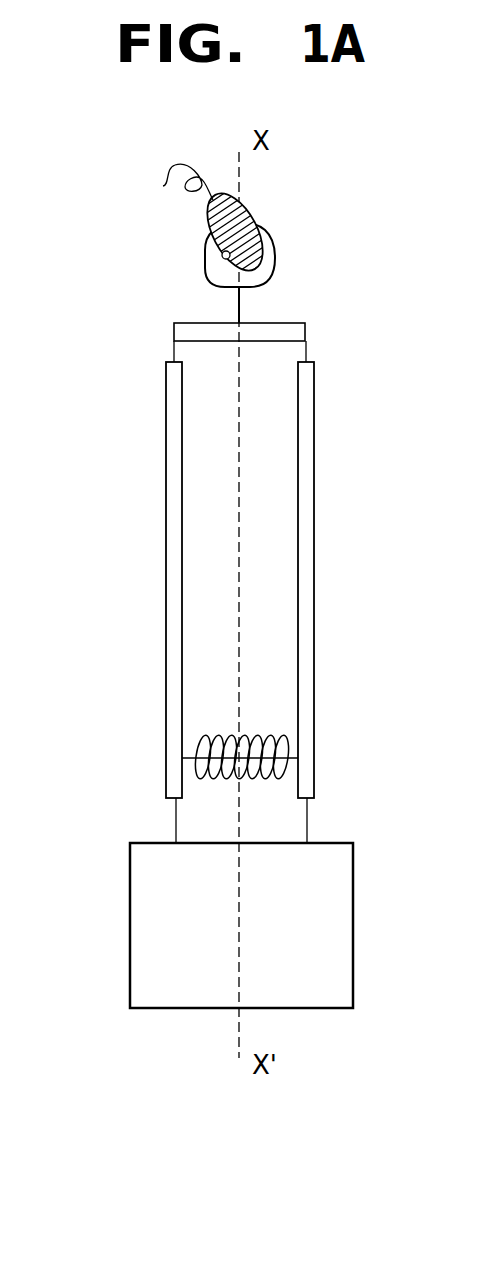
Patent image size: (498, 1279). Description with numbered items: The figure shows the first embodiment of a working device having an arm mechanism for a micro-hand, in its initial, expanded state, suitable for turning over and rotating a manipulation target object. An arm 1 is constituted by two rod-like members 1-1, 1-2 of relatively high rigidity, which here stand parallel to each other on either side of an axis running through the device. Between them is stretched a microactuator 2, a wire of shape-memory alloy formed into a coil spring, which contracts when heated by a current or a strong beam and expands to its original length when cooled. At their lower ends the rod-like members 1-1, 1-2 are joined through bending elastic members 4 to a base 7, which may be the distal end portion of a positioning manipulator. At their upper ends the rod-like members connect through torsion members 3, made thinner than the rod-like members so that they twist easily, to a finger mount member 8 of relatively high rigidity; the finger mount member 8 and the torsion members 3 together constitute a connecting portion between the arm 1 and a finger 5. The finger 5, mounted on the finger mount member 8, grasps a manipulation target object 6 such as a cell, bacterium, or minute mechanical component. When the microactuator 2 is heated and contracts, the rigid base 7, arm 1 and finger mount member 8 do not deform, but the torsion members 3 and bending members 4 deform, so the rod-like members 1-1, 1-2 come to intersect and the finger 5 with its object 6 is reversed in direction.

The arm 1 is at (110, 518).
The rod-like member 1-1 is at (166, 637).
The rod-like member 1-2 is at (315, 563).
The microactuator 2 is at (218, 735).
The torsion member 3 is at (172, 360).
The bending elastic member 4 is at (172, 822).
The finger 5 is at (275, 252).
The manipulation target object 6 is at (245, 200).
The base 7 is at (130, 927).
The finger mount member 8 is at (275, 322).